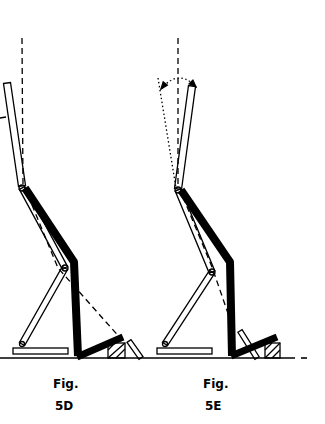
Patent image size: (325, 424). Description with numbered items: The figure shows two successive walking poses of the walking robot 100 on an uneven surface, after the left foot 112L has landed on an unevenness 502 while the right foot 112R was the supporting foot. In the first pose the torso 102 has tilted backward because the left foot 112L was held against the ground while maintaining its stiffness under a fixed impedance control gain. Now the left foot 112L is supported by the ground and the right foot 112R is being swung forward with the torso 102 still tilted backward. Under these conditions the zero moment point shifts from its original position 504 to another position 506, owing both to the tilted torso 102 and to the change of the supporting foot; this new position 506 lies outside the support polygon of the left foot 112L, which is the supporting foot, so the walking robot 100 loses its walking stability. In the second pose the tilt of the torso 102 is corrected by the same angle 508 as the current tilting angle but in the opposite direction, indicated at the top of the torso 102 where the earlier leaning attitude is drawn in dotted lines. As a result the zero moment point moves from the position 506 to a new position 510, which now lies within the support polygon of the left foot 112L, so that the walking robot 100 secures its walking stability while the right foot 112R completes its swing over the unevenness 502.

In FIG. 5D, the walking robot 100 is at (42, 83).
In FIG. 5E, the walking robot 100 is at (220, 82).
In FIG. 5E, the torso 102 is at (191, 127).
In FIG. 5D, the right foot 112R is at (38, 356).
In FIG. 5E, the right foot 112R is at (185, 356).
In FIG. 5D, the left foot 112L is at (122, 337).
In FIG. 5E, the left foot 112L is at (285, 328).
In FIG. 5D, the unevenness 502 is at (120, 357).
In FIG. 5E, the unevenness 502 is at (277, 358).
In FIG. 5D, the position of the ZMP 504 is at (86, 330).
In FIG. 5E, the position of the ZMP 504 is at (241, 320).
In FIG. 5D, the position of the ZMP 506 is at (137, 352).
In FIG. 5E, the angle 508 is at (164, 86).
In FIG. 5E, the position of the ZMP 510 is at (247, 333).